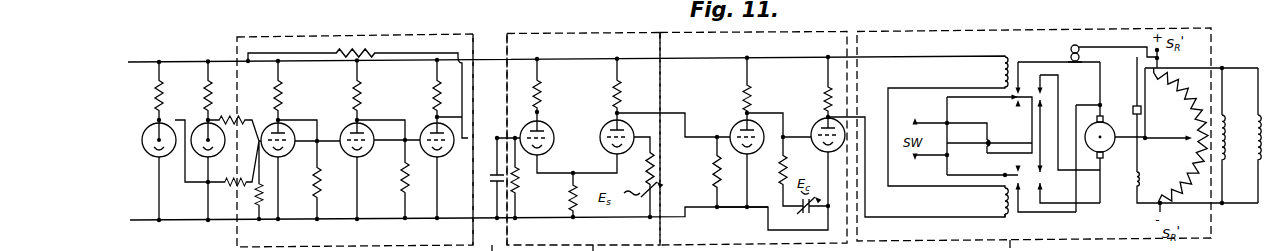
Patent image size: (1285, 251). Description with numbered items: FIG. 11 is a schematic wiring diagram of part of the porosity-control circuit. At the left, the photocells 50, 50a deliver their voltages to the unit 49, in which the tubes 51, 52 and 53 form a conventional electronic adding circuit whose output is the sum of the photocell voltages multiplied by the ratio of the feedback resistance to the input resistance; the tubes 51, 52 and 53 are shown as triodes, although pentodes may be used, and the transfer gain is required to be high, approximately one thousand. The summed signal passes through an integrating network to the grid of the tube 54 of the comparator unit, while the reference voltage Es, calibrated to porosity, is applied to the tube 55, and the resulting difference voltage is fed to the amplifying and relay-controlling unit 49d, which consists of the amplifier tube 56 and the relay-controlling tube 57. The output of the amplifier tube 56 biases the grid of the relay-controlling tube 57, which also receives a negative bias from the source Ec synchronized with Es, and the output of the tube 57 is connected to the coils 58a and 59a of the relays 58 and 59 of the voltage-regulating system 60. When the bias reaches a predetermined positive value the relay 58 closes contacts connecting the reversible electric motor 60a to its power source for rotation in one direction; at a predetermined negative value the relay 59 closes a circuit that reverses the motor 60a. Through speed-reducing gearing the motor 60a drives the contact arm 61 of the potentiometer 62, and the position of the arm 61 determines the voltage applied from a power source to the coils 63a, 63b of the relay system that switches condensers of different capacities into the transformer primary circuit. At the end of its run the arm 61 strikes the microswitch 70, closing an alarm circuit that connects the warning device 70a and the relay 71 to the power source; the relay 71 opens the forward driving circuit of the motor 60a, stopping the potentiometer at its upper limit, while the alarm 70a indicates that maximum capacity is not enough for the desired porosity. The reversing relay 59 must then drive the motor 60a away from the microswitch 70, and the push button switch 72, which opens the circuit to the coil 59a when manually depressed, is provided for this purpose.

The amplifier unit 49 is at (441, 33).
The amplifying and relay-controlling unit 49d is at (678, 32).
The photoelectric cell 50 is at (146, 152).
The photoelectric cell 50a is at (203, 120).
The tube of the electronic adding unit 51 is at (289, 154).
The tube of the electronic adding unit 52 is at (370, 154).
The tube of the electronic adding unit 53 is at (449, 154).
The tube of the comparator unit 54 is at (552, 125).
The tube of the comparator unit 55 is at (603, 147).
The amplifier tube 56 is at (735, 124).
The relay-controlling tube 57 is at (815, 122).
The relay 58 is at (1020, 56).
The relay coil 58a is at (1002, 69).
The reversing relay 59 is at (1026, 216).
The relay coil 59a is at (1003, 194).
The voltage-regulating system 60 is at (912, 30).
The reversible electric motor 60a is at (1091, 124).
The contact arm 61 is at (1168, 150).
The potentiometer 62 is at (1180, 135).
The relay system coil 63a is at (1224, 118).
The relay system coil 63b is at (1258, 160).
The microswitch 70 is at (1134, 106).
The warning device 70a is at (1137, 190).
The relay 71 is at (1070, 48).
The push button switch 72 is at (992, 214).